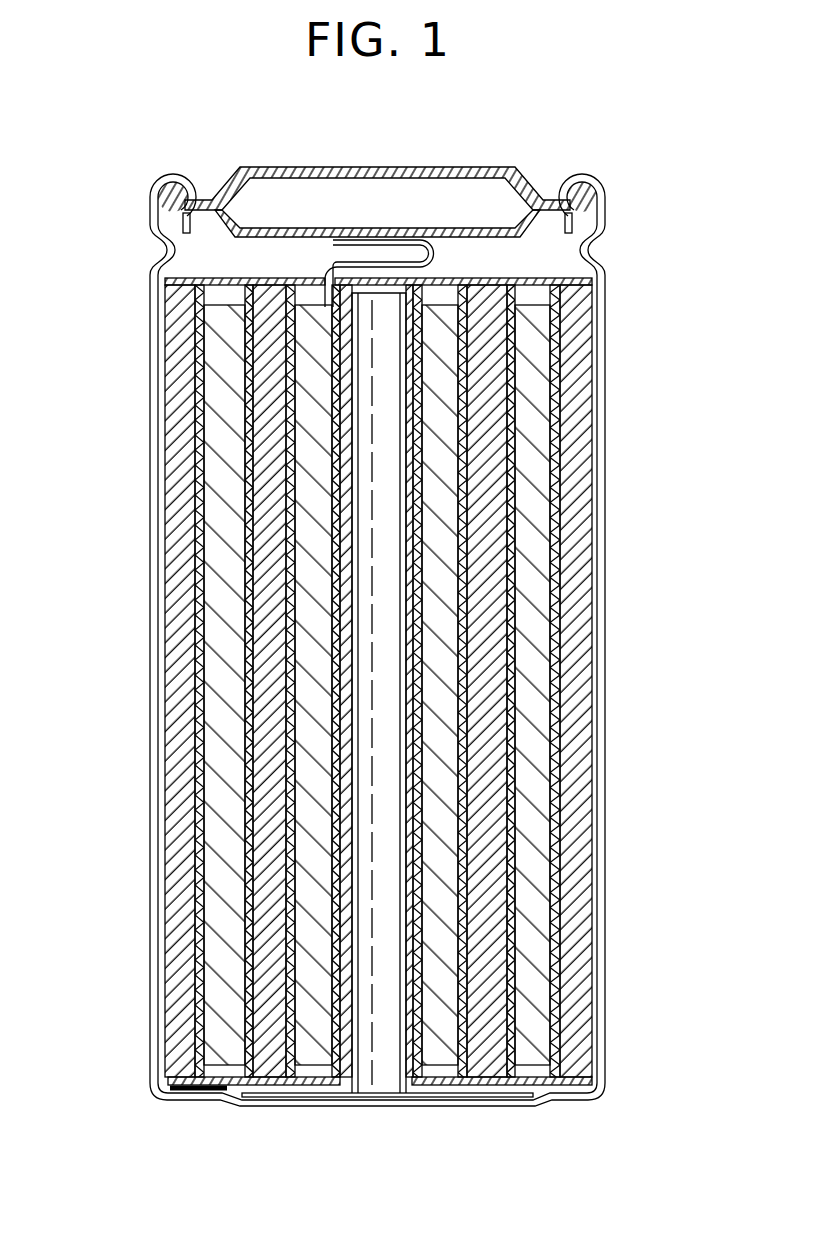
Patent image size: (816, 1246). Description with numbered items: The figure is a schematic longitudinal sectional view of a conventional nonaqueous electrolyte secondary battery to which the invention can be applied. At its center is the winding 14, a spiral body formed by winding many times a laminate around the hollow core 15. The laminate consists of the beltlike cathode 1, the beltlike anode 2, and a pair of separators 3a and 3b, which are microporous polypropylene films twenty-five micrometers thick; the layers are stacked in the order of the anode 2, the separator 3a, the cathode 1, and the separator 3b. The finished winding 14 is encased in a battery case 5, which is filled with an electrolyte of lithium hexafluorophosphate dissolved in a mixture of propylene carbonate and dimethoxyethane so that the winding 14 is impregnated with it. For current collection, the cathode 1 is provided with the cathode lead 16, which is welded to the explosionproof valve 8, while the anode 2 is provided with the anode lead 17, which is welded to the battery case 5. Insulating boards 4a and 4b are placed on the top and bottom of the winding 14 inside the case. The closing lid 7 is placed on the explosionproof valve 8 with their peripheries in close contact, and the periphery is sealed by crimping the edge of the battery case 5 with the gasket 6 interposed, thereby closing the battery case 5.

The cathode 1 is at (305, 607).
The anode 2 is at (262, 745).
The separator 3a is at (470, 410).
The separator 3b is at (337, 395).
The insulating board 4a is at (560, 282).
The insulating board 4b is at (205, 1090).
The battery case 5 is at (152, 930).
The gasket 6 is at (174, 176).
The closing lid 7 is at (306, 167).
The explosionproof valve 8 is at (470, 228).
The winding 14 is at (600, 505).
The hollow core 15 is at (355, 1050).
The cathode lead 16 is at (395, 262).
The anode lead 17 is at (268, 1097).